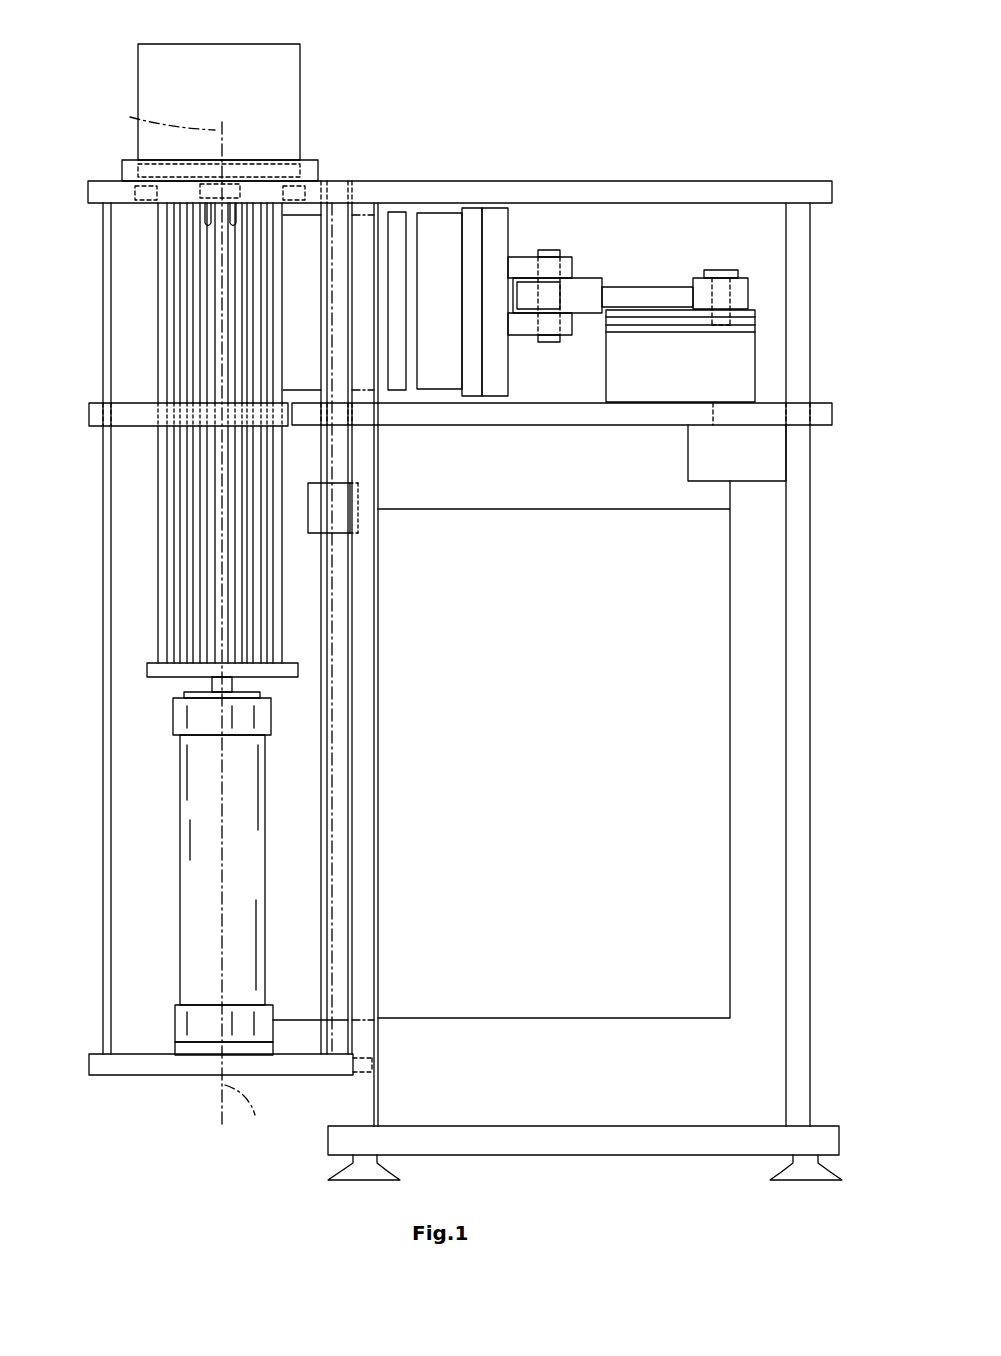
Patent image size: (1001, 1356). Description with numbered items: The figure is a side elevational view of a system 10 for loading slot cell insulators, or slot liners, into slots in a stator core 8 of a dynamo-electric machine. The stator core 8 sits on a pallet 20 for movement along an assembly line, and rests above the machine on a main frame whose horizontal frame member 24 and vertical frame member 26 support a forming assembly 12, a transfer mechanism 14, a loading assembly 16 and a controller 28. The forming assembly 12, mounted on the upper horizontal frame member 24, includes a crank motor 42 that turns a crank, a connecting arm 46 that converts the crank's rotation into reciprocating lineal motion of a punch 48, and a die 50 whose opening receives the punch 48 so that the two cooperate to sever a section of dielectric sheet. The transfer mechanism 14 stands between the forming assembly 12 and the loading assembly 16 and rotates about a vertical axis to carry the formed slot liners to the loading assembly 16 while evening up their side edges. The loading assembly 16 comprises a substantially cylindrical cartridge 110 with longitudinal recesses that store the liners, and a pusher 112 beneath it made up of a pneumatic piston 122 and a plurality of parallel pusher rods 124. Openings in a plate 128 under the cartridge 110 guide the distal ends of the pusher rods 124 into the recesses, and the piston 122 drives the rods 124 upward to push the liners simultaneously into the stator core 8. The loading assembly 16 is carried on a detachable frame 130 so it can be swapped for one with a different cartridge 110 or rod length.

The stator core 8 is at (250, 62).
The system 10 is at (632, 92).
The forming assembly 12 is at (582, 236).
The transfer mechanism 14 is at (358, 188).
The loading assembly 16 is at (164, 447).
The pallet 20 is at (300, 166).
The horizontal frame member 24 is at (820, 190).
The vertical frame member 26 is at (800, 322).
The controller 28 is at (752, 465).
The crank motor 42 is at (740, 375).
The connecting arm 46 is at (662, 293).
The punch 48 is at (432, 240).
The die 50 is at (400, 380).
The cartridge 110 is at (165, 300).
The pusher 112 is at (164, 559).
The pneumatic piston 122 is at (190, 970).
The pusher rods 124 is at (160, 598).
The plate 128 is at (95, 410).
The detachable frame 130 is at (108, 910).